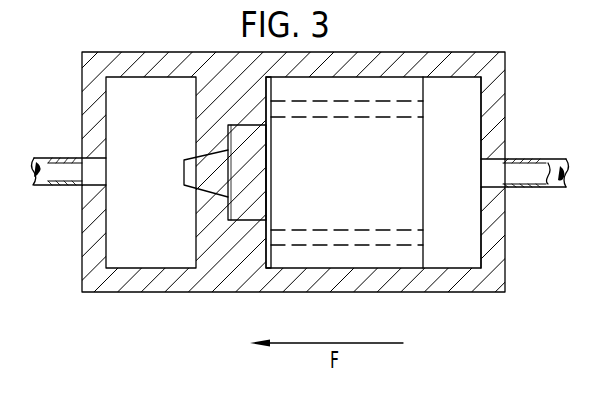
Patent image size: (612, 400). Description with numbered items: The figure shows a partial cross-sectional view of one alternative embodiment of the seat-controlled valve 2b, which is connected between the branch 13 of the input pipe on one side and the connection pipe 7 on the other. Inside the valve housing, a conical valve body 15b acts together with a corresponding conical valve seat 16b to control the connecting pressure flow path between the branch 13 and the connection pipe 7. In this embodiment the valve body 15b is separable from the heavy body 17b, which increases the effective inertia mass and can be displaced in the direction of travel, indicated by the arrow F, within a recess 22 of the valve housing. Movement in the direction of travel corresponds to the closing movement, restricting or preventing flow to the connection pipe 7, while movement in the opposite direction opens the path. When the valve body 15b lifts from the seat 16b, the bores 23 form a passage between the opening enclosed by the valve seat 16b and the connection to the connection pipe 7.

The seat-controlled valve 2b is at (512, 74).
The connection pipe 7 is at (530, 172).
The branch 13 is at (40, 183).
The valve body 15b is at (193, 183).
The valve seat 16b is at (181, 158).
The heavy body 17b is at (412, 185).
The recess 22 is at (473, 236).
The bores 23 is at (321, 121).